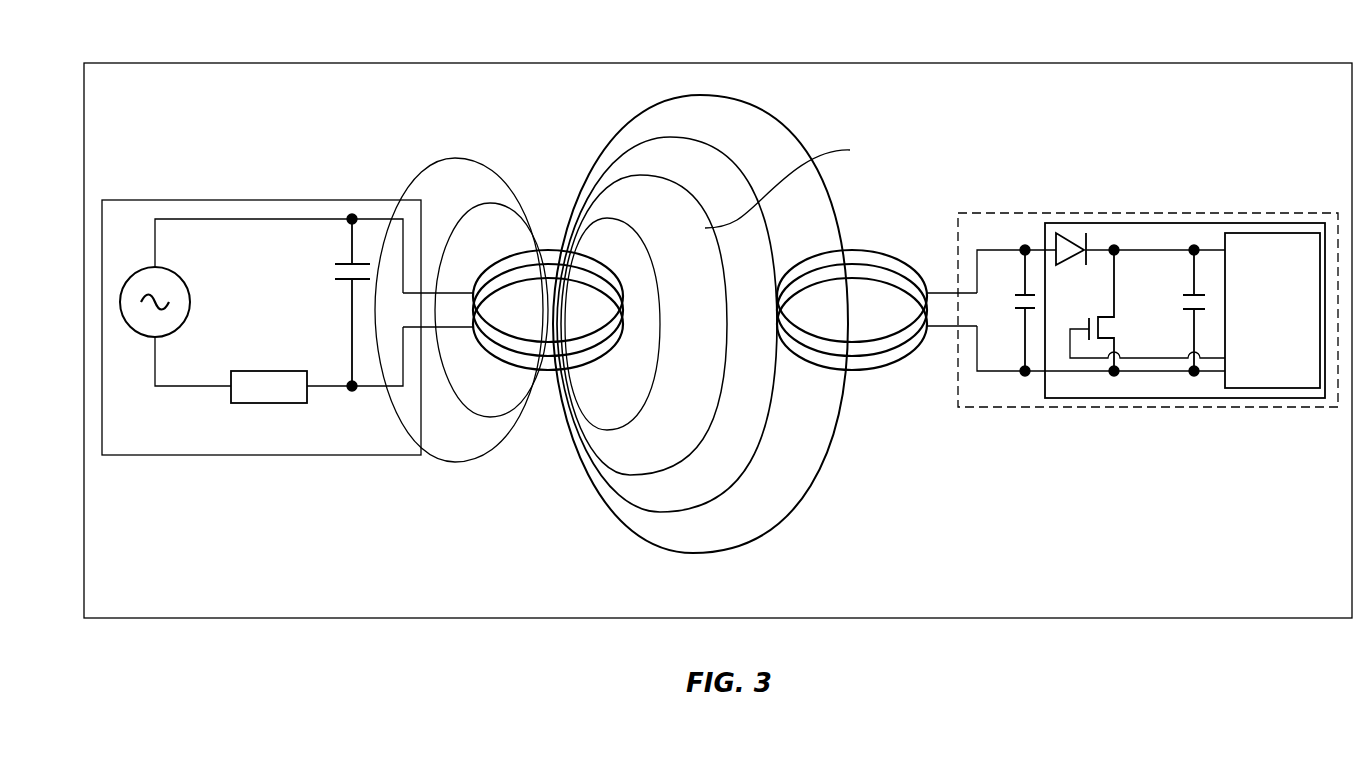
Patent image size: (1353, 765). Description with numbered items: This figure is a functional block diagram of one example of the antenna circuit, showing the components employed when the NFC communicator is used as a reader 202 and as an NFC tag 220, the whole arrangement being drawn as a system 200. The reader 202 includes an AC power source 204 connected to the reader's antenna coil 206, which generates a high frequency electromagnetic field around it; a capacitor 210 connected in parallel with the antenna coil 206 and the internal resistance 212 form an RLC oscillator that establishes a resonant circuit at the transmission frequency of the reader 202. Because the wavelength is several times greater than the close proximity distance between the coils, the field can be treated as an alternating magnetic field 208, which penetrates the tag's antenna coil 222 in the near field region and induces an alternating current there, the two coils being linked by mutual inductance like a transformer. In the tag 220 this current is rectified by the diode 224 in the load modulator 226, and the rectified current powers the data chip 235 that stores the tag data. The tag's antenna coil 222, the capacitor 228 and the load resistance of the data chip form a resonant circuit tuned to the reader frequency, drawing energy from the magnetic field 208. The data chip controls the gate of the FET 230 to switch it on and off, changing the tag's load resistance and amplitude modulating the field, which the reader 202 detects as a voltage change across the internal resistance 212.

The RFID system 200 is at (152, 63).
The reader 202 is at (165, 200).
The AC power source 204 is at (150, 338).
The antenna coil 206 is at (538, 372).
The alternating magnetic field 208 is at (458, 160).
The capacitor 210 is at (335, 272).
The internal resistance 212 is at (268, 371).
The NFC tag 220 is at (1030, 212).
The antenna coil 222 is at (885, 370).
The diode 224 is at (1070, 245).
The load modulator 226 is at (1243, 222).
The capacitor 228 is at (1010, 298).
The FET 230 is at (1105, 317).
The data chip 235 is at (1275, 398).